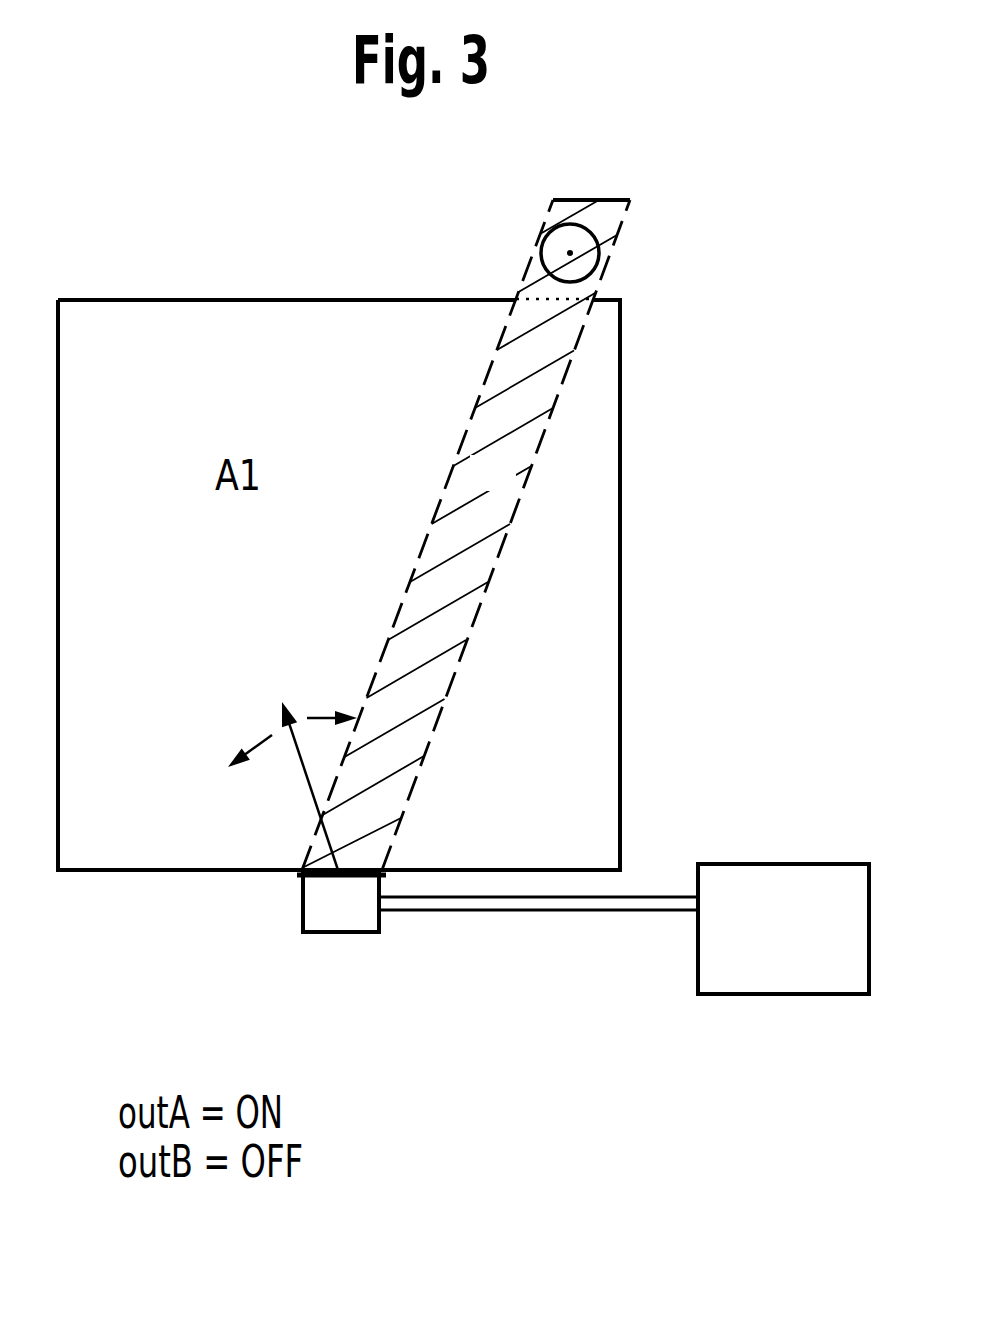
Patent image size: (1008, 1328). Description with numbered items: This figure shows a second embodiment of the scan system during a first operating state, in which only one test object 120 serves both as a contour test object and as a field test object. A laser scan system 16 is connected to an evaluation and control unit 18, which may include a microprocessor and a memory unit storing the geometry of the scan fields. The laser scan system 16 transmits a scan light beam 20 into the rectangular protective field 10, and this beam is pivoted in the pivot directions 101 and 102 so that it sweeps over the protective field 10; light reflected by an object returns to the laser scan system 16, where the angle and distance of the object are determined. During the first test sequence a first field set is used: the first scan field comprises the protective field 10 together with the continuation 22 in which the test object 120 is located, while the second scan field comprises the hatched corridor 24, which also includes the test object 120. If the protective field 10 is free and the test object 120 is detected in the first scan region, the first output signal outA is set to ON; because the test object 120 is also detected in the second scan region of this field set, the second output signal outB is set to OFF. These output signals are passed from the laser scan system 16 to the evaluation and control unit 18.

The protective field 10 is at (620, 558).
The laser scan system 16 is at (347, 915).
The evaluation and control unit 18 is at (777, 974).
The scan light beam 20 is at (304, 772).
The continuation 22 is at (603, 272).
The corridor 24 is at (543, 433).
The pivot direction 101 is at (252, 742).
The pivot direction 102 is at (307, 718).
The test object 120 is at (600, 228).